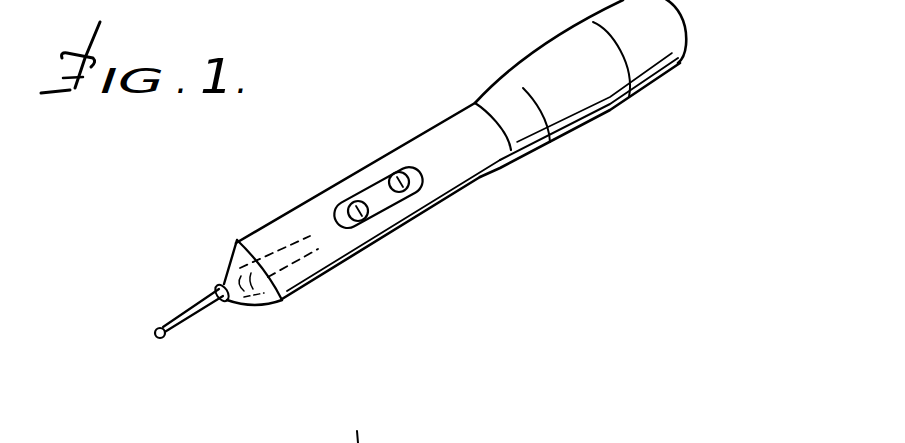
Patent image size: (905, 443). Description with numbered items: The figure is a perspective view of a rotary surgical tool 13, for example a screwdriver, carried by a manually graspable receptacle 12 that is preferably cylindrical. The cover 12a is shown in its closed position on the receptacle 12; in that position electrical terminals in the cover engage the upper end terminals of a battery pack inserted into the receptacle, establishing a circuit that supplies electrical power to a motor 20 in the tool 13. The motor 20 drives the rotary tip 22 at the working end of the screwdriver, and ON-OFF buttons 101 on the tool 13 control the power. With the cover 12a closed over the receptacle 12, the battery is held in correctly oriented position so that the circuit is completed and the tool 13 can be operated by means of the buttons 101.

The manually graspable receptacle 12 is at (575, 99).
The cover 12a is at (664, 30).
The surgical tool 13 is at (189, 331).
The motor 20 is at (284, 250).
The rotary tip 22 is at (153, 329).
The ON-OFF buttons 101 is at (401, 192).